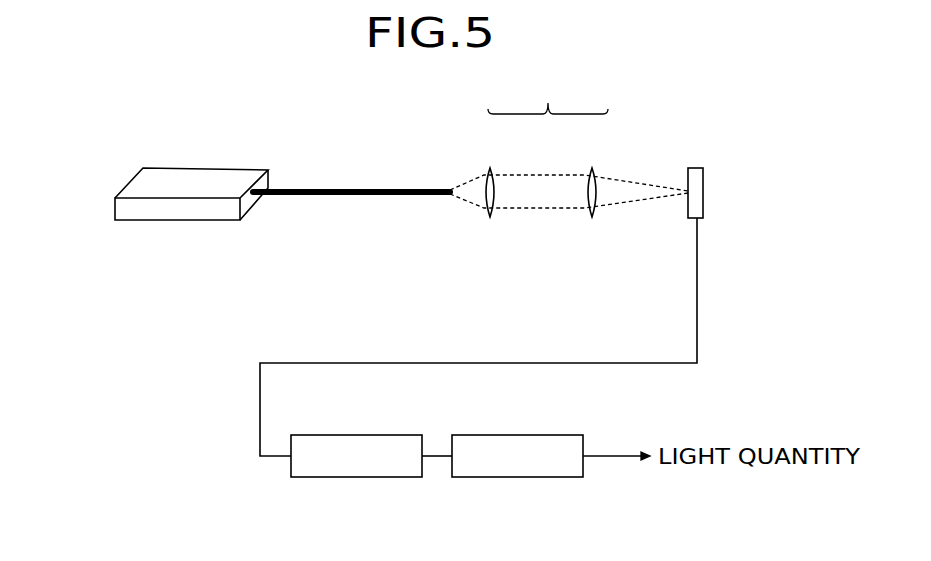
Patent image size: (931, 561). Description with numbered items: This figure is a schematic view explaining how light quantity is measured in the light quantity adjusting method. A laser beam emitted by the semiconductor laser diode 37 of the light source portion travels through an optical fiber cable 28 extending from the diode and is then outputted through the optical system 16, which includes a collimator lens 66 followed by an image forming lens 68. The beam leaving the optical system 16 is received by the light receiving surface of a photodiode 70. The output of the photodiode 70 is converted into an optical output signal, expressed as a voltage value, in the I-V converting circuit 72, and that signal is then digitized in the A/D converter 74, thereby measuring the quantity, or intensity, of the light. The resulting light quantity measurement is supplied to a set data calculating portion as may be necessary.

The semiconductor laser diode 37 is at (197, 172).
The optical fiber cable 28 is at (352, 196).
The optical system 16 is at (550, 146).
The collimator lens 66 is at (492, 170).
The image forming lens 68 is at (594, 170).
The photodiode 70 is at (697, 168).
The I-V converting circuit 72 is at (356, 478).
The A/D converter 74 is at (517, 478).